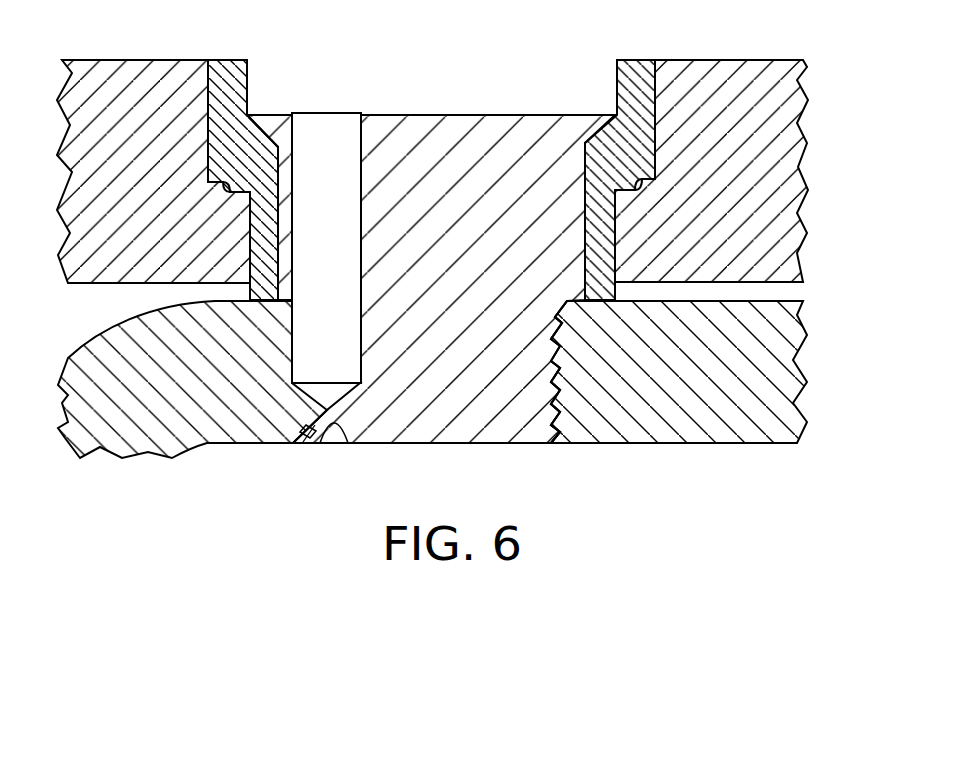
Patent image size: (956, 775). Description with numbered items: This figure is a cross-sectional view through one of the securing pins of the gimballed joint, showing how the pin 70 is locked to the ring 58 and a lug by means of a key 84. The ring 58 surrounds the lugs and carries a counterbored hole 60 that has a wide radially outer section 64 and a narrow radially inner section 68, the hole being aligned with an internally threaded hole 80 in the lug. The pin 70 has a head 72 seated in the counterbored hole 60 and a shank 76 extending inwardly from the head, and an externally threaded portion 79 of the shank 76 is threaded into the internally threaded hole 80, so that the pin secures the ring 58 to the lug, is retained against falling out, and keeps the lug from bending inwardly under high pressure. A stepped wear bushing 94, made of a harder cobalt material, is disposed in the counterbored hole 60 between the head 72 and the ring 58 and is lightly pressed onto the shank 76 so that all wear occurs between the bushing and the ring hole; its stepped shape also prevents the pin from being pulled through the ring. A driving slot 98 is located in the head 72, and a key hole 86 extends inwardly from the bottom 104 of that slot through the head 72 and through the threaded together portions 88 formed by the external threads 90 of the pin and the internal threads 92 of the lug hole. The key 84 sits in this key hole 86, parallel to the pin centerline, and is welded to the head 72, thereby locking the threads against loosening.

The ring 58 is at (737, 60).
The counterbored hole 60 is at (243, 180).
The wide radially outer section 64 is at (209, 63).
The narrow radially inner section 68 is at (585, 168).
The pin 70 is at (536, 443).
The head 72 is at (452, 127).
The shank 76 is at (543, 262).
The externally threaded portion 79 is at (455, 425).
The internally threaded hole 80 is at (320, 448).
The key 84 is at (327, 112).
The key hole 86 is at (362, 254).
The threaded together portions 88 is at (574, 424).
The external threads 90 is at (300, 418).
The internal threads 92 is at (348, 443).
The wear bushing 94 is at (637, 62).
The driving slot 98 is at (405, 103).
The bottom 104 is at (511, 113).